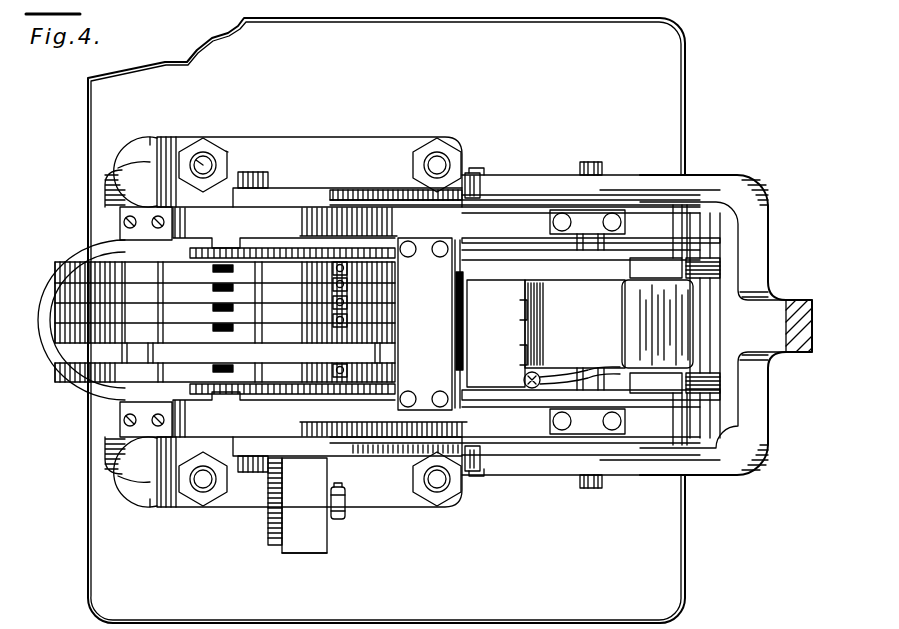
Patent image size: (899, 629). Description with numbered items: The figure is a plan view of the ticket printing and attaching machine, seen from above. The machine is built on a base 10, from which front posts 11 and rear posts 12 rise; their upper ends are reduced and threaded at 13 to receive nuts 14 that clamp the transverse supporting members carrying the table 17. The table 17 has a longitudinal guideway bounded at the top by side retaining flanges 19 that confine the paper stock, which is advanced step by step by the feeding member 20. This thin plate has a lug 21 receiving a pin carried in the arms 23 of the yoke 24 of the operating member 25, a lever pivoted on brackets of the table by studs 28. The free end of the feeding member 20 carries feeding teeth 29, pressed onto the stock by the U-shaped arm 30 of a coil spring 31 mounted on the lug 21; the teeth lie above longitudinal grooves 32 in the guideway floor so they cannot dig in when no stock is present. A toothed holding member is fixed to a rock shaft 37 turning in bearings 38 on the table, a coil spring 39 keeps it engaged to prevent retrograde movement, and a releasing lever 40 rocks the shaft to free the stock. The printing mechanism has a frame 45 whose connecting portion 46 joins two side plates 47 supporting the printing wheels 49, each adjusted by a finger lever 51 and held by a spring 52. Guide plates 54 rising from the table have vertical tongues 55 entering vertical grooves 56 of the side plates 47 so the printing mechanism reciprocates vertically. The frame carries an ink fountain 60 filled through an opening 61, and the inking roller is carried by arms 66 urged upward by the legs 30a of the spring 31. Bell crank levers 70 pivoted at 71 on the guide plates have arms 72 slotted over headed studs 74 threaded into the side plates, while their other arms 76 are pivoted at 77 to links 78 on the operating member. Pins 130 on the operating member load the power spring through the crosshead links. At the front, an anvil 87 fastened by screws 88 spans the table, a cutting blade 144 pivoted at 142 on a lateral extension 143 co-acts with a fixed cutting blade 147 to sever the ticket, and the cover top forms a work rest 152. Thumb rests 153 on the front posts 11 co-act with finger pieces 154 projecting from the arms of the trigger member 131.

The base 10 is at (687, 530).
The front posts 11 is at (203, 150).
The rear posts 12 is at (437, 160).
The threaded reduced upper ends 13 is at (197, 165).
The nuts 14 is at (210, 150).
The table 17 is at (500, 210).
The side retaining flanges 19 is at (476, 385).
The feeding member 20 is at (575, 324).
The lug 21 is at (708, 306).
The arms 23 is at (628, 185).
The yoke 24 is at (762, 444).
The operating member 25 is at (772, 352).
The studs 28 is at (591, 162).
The feeding teeth 29 is at (522, 372).
The U-shaped arm 30 is at (620, 340).
The legs 30a is at (656, 325).
The coil spring 31 is at (715, 262).
The longitudinal grooves 32 is at (505, 288).
The rock shaft 37 is at (620, 240).
The bearings 38 is at (580, 222).
The coil spring 39 is at (626, 412).
The releasing lever 40 is at (532, 389).
The frame 45 is at (318, 205).
The connecting portion 46 is at (425, 324).
The side plates 47 is at (305, 212).
The printing wheels 49 is at (80, 312).
The finger lever 51 is at (212, 368).
The spring 52 is at (347, 267).
The guide plates 54 is at (172, 206).
The vertical tongues 55 is at (220, 246).
The vertical grooves 56 is at (242, 244).
The ink fountain 60 is at (460, 272).
The opening 61 is at (455, 328).
The arms 66 is at (672, 212).
The bell crank levers 70 is at (342, 190).
The pivot 71 is at (368, 195).
The arms 72 is at (272, 195).
The headed studs 74 is at (248, 172).
The other arms 76 is at (372, 195).
The pivotal connection 77 is at (402, 190).
The links 78 is at (645, 200).
The anvil 87 is at (126, 418).
The screws 88 is at (106, 205).
The pins 130 is at (480, 172).
The trigger member 131 is at (40, 285).
The pivot 142 is at (338, 522).
The lateral extension 143 is at (303, 553).
The cutting blade 144 is at (268, 540).
The fixed cutting blade 147 is at (308, 372).
The work rest 152 is at (95, 372).
The thumb rests 153 is at (132, 152).
The finger pieces 154 is at (108, 182).